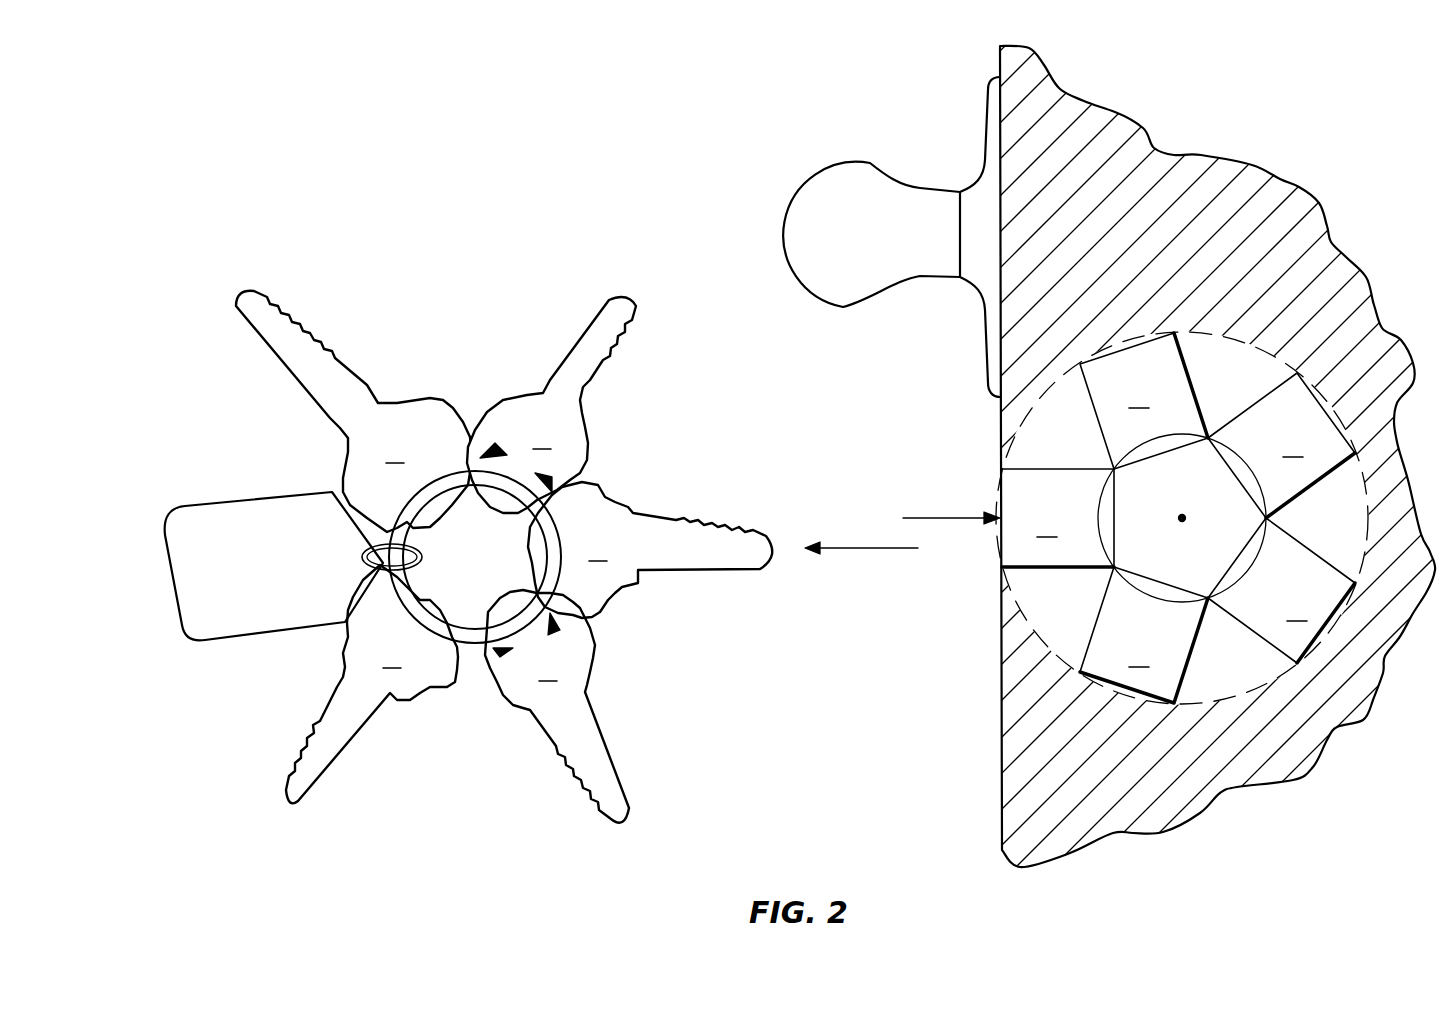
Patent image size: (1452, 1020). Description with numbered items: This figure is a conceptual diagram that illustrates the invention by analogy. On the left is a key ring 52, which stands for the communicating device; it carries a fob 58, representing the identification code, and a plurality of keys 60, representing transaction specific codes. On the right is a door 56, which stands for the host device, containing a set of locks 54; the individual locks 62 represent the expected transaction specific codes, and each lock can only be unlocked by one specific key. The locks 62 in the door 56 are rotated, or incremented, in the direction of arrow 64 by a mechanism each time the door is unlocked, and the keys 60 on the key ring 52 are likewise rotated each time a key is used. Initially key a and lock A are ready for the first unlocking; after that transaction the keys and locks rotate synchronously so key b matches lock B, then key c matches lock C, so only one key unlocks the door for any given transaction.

The key ring 52 is at (173, 328).
The set of locks 54 is at (1229, 329).
The door 56 is at (1000, 438).
The fob 58 is at (183, 502).
The keys 60 is at (350, 763).
The locks 62 is at (1268, 647).
The arrow 64 is at (1135, 545).